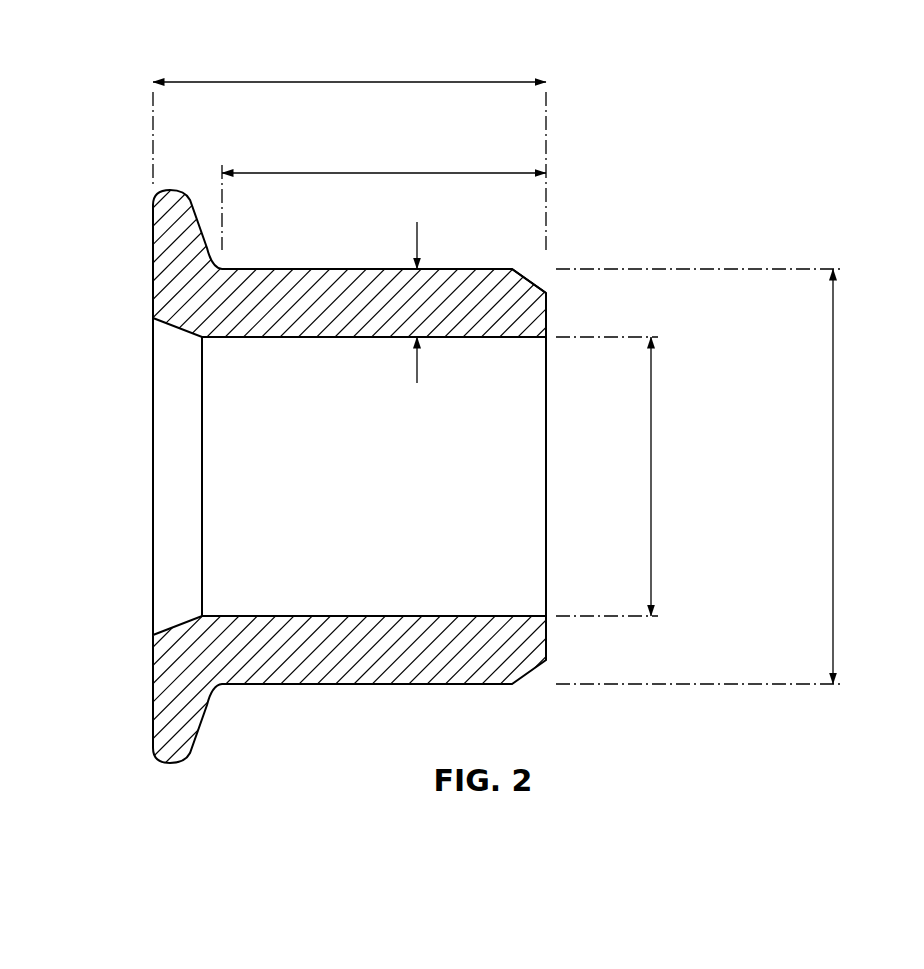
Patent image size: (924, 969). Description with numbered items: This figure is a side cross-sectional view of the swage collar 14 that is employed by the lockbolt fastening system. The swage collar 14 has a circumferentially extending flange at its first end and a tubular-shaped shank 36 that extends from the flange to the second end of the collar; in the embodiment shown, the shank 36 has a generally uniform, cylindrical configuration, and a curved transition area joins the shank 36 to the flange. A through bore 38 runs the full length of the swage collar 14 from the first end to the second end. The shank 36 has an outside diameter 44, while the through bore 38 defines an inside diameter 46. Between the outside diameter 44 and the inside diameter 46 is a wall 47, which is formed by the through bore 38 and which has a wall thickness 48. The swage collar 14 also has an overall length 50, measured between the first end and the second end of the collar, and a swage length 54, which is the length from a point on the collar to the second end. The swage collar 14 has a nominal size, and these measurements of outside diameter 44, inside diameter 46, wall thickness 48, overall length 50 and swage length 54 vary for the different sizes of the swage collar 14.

The swage collar 14 is at (343, 684).
The shank 36 is at (300, 268).
The through bore 38 is at (280, 460).
The outside diameter 44 is at (834, 476).
The inside diameter 46 is at (652, 476).
The wall 47 is at (507, 302).
The wall thickness 48 is at (419, 248).
The overall length 50 is at (342, 80).
The swage length 54 is at (385, 173).